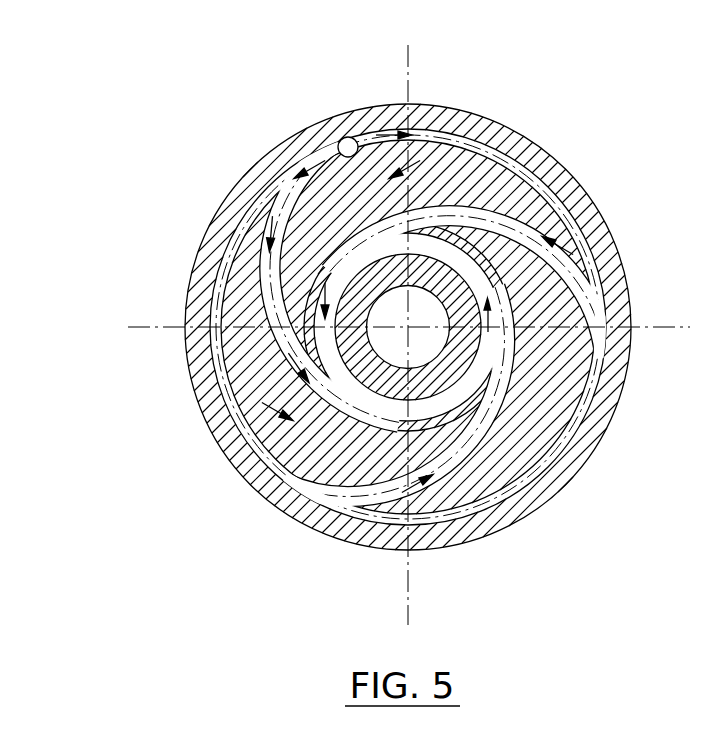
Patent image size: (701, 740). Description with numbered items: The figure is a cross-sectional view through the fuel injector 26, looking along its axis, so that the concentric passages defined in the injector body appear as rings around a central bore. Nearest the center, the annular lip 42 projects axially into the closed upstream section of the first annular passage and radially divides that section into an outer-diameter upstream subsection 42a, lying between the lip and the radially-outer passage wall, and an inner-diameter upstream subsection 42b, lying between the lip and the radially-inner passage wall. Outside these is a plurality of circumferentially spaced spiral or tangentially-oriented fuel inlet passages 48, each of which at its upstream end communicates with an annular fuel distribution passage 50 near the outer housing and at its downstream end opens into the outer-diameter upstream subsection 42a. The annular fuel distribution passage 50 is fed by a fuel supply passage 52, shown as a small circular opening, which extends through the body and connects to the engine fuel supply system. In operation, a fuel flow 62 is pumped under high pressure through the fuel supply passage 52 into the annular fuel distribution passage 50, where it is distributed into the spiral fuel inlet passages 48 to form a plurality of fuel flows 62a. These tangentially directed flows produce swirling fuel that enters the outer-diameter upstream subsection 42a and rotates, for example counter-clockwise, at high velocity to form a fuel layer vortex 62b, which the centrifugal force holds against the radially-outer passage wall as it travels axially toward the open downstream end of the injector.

The fuel injector 26 is at (569, 95).
The annular lip 42 is at (535, 298).
The outer-diameter upstream subsection 42a is at (505, 172).
The inner-diameter upstream subsection 42b is at (290, 447).
The spiral or tangentially-oriented fuel inlet passages 48 is at (282, 208).
The annular fuel distribution passage 50 is at (577, 180).
The fuel supply passage 52 is at (350, 137).
The fuel flow 62 is at (307, 165).
The fuel flows 62a is at (553, 252).
The fuel layer vortex 62b is at (560, 305).